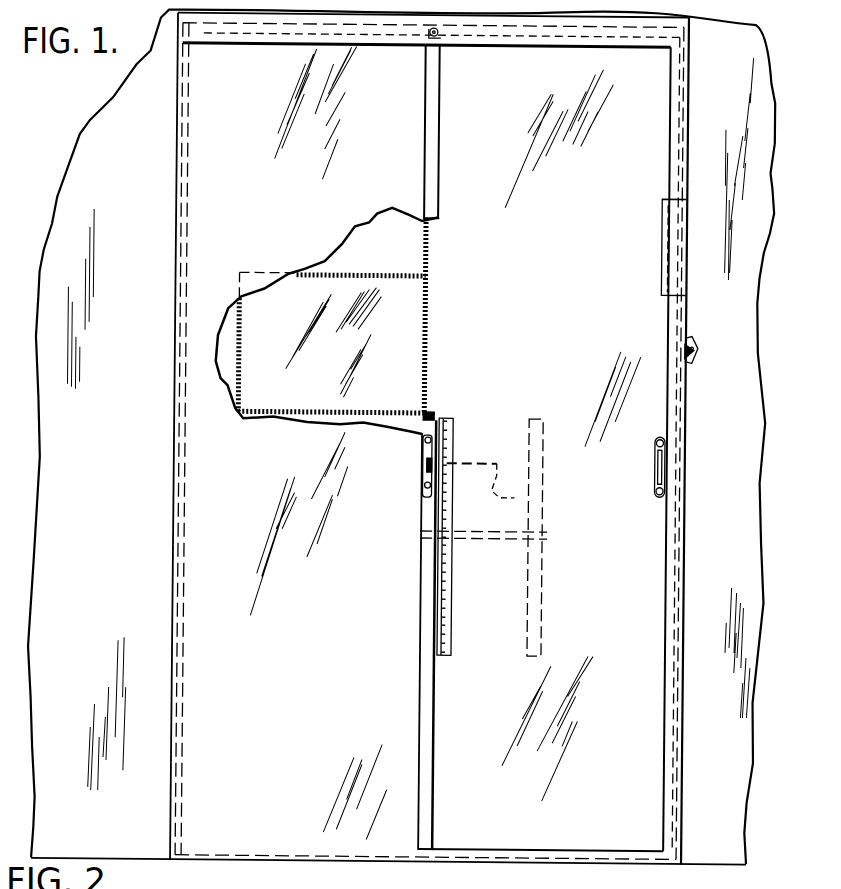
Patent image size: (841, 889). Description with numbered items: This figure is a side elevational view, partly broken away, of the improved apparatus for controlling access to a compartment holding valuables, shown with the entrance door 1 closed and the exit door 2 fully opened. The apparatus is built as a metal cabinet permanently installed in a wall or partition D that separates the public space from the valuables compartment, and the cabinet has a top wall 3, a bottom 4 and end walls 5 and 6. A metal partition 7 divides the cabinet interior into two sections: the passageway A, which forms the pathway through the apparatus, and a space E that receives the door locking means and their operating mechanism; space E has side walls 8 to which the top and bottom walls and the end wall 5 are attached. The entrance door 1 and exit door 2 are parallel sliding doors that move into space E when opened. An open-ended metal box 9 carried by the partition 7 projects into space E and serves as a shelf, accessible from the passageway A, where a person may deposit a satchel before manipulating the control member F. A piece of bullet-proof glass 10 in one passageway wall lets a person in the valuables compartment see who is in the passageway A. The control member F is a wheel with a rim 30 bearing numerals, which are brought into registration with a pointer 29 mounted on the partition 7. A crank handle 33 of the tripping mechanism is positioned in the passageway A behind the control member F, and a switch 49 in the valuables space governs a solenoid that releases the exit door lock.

The entrance door 1 is at (647, 686).
The exit door 2 is at (434, 122).
The top wall 3 is at (490, 30).
The bottom 4 is at (449, 858).
The end wall 5 is at (174, 547).
The end wall 6 is at (680, 516).
The metal partition 7 is at (430, 258).
The side walls 8 is at (207, 641).
The open-ended metal box 9 is at (240, 312).
The bullet-proof glass 10 is at (666, 235).
The pointer 29 is at (428, 416).
The rim 30 is at (448, 443).
The crank handle 33 is at (422, 497).
The switch 49 is at (692, 356).
The passageway A is at (513, 313).
The wall or partition D is at (735, 515).
The space E is at (363, 238).
The control member F is at (450, 577).